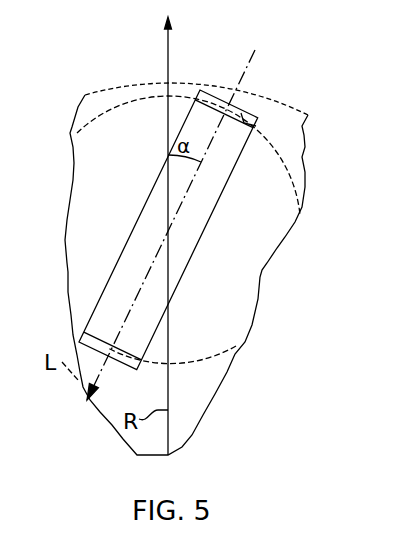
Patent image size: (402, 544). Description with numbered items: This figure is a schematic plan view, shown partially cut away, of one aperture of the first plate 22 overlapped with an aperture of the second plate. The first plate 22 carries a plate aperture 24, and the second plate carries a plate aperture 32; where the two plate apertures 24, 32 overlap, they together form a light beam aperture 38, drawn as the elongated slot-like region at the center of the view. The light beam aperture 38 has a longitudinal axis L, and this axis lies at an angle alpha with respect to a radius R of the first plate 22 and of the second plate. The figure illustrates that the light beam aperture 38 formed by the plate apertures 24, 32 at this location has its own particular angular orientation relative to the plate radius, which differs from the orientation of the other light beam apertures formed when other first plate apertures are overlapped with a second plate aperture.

The first plate 22 is at (150, 92).
The plate aperture 24 is at (243, 113).
The plate aperture 32 is at (116, 110).
The light beam aperture 38 is at (92, 322).